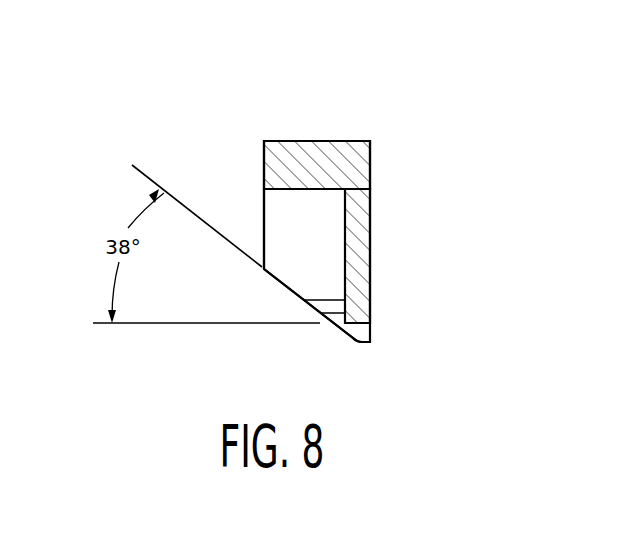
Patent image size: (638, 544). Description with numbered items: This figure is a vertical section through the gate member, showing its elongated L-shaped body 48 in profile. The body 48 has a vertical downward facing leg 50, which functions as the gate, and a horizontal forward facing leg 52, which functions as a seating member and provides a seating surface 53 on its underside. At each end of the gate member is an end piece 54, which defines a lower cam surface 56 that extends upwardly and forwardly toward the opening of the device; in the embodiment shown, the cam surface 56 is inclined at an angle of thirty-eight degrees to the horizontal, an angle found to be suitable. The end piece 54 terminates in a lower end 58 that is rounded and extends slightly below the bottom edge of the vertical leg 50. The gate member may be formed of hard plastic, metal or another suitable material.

The L-shaped body 48 is at (371, 180).
The vertical downward facing leg 50 is at (366, 243).
The horizontal forward facing leg 52 is at (297, 152).
The seating surface 53 is at (272, 198).
The end piece 54 is at (274, 247).
The lower cam surface 56 is at (297, 293).
The lower end 58 is at (372, 342).